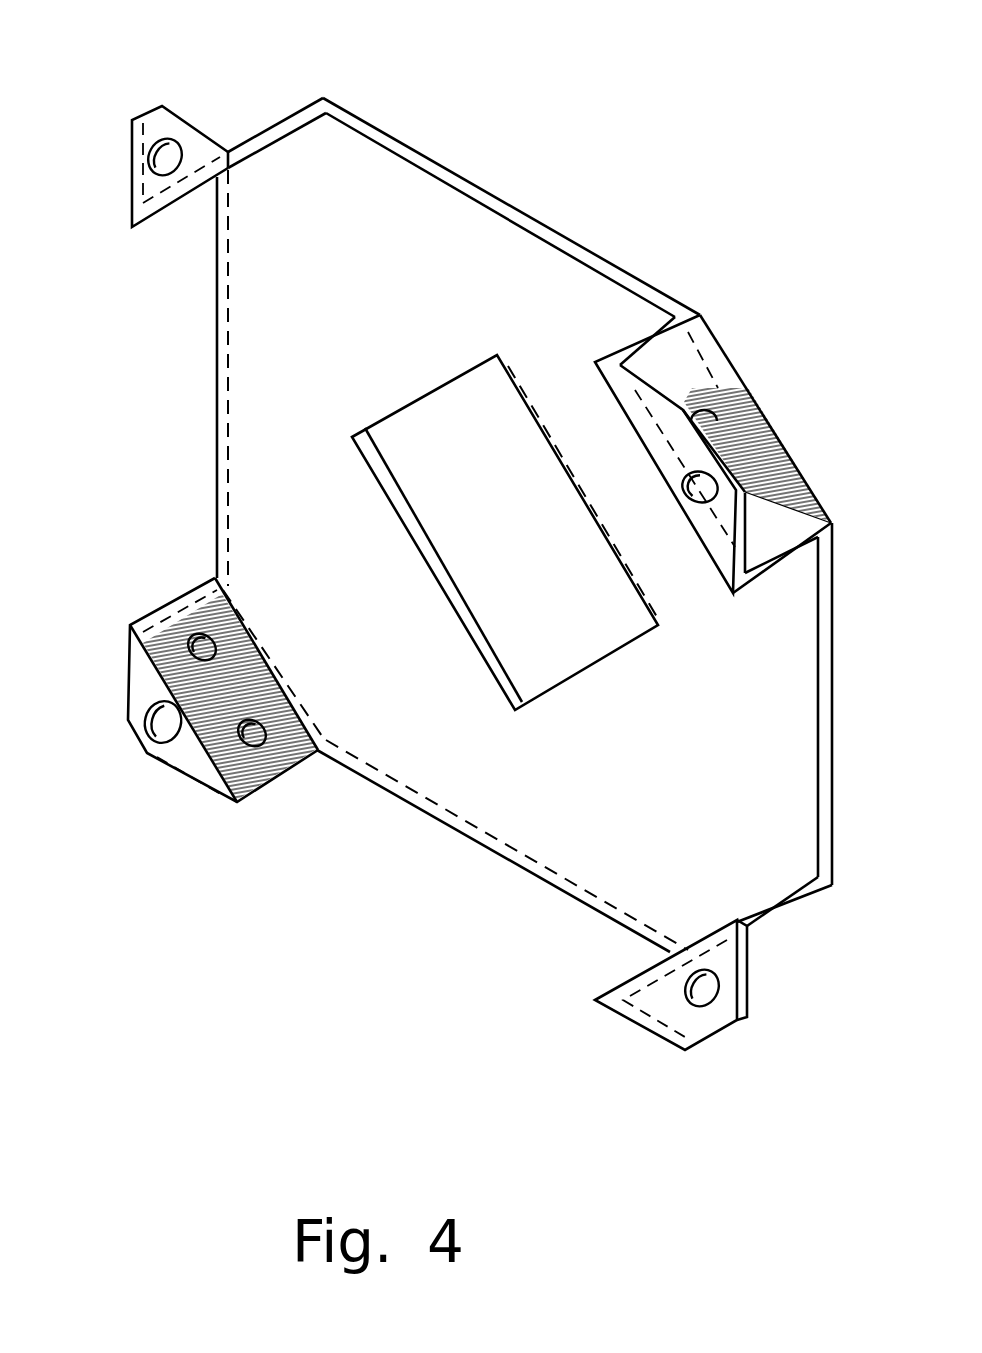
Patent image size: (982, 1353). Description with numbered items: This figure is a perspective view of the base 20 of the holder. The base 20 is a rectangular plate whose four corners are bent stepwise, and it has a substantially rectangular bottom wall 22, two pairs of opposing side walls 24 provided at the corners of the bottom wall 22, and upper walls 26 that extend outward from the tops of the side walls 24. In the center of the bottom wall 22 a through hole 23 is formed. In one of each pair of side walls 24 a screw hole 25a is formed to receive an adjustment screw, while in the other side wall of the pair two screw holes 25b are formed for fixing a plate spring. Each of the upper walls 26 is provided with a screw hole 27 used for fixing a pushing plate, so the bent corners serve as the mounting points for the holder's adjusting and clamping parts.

The base 20 is at (690, 160).
The bottom wall 22 is at (465, 218).
The through hole 23 is at (480, 620).
The side walls 24 is at (273, 127).
The screw hole 25a is at (740, 390).
The screw holes 25b is at (200, 623).
The upper walls 26 is at (151, 128).
The screw hole 27 is at (158, 178).